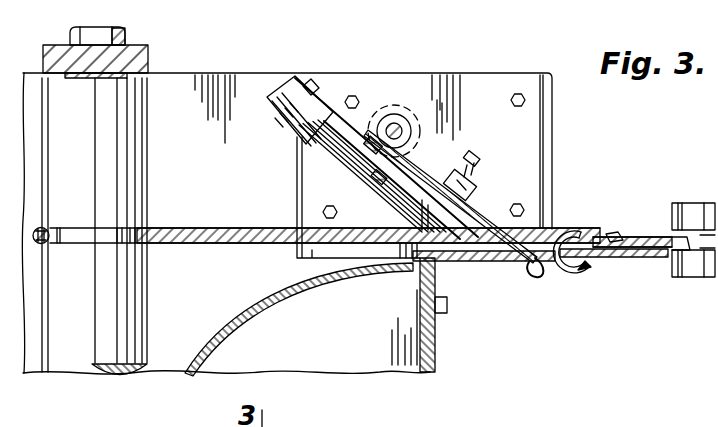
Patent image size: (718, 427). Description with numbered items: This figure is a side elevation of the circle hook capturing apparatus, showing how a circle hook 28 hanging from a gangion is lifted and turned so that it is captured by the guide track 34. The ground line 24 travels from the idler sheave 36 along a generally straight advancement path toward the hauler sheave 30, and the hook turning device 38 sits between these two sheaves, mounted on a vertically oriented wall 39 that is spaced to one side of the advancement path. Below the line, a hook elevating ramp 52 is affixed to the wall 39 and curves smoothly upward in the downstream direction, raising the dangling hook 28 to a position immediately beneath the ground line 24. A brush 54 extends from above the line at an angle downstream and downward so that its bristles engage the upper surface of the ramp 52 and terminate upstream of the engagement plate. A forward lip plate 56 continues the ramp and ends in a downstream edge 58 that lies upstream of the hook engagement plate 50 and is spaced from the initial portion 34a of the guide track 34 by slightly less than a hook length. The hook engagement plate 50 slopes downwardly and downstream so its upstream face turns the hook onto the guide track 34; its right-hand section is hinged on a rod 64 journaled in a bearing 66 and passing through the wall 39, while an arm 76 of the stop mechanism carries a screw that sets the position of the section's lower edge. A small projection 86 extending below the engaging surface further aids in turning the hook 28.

The ground line 24 is at (182, 228).
The circle hook 28 is at (585, 230).
The hauler sheave 30 is at (700, 203).
The guide track 34 is at (584, 264).
The initial portion of guide track 34a is at (554, 276).
The idler sheave 36 is at (128, 136).
The hook turning device 38 is at (507, 147).
The wall 39 is at (222, 73).
The hook engagement plate 50 is at (502, 212).
The hook elevating ramp 52 is at (235, 290).
The brush 54 is at (324, 181).
The forward lip plate 56 is at (470, 264).
The downstream edge 58 is at (500, 262).
The rod 64 is at (396, 118).
The bearing 66 is at (414, 118).
The arm 76 is at (453, 146).
The projection 86 is at (540, 276).